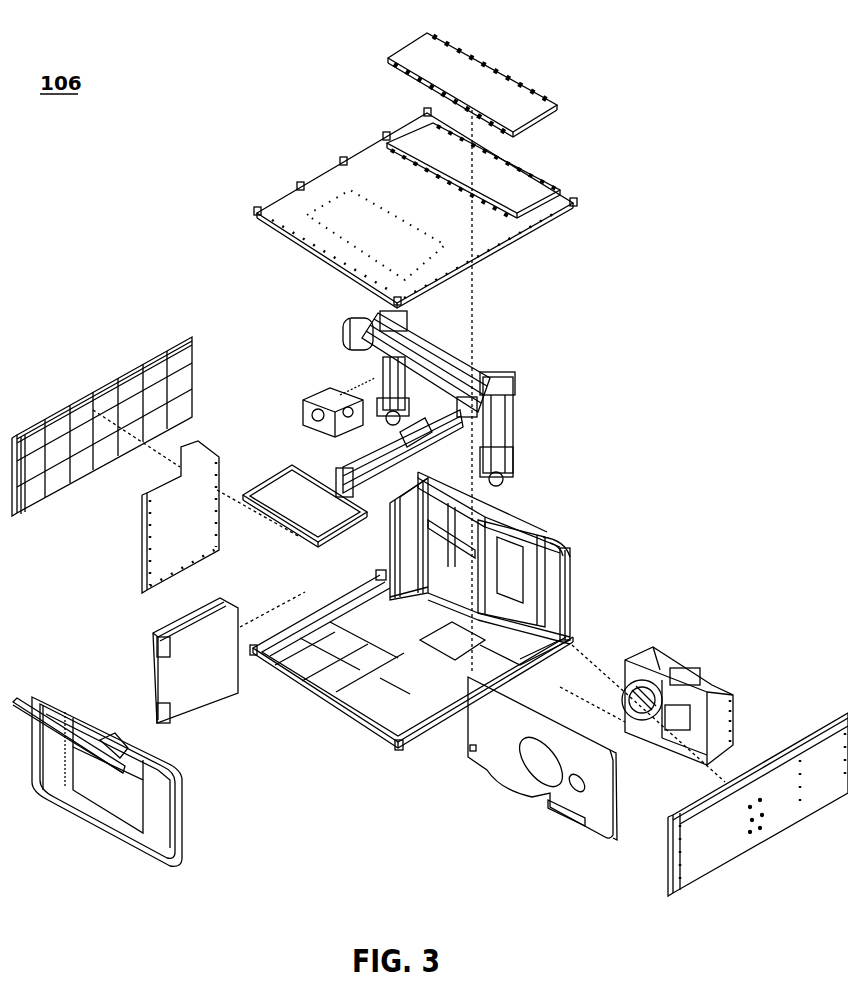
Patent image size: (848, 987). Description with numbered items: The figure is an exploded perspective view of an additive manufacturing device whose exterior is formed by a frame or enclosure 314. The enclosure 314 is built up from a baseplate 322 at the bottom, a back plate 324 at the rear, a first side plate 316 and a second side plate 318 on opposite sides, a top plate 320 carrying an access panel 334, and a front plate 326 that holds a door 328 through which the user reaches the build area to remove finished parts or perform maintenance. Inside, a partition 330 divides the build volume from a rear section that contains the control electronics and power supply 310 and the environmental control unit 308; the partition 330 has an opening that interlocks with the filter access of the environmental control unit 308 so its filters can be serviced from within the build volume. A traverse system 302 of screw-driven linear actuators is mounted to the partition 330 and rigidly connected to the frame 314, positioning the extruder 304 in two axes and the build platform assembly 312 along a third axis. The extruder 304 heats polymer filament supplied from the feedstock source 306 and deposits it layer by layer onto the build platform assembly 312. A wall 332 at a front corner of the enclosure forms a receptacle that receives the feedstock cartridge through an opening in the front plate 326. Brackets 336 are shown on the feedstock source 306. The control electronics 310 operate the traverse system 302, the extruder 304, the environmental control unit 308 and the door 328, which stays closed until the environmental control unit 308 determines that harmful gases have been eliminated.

The traverse system 302 is at (496, 372).
The extruder 304 is at (315, 395).
The feedstock source 306 is at (173, 685).
The environmental control unit 308 is at (720, 682).
The control electronics and power supply 310 is at (507, 517).
The build platform assembly 312 is at (285, 475).
The frame 314 is at (102, 415).
The first side plate 316 is at (110, 382).
The second side plate 318 is at (698, 867).
The top plate 320 is at (565, 200).
The baseplate 322 is at (340, 703).
The back plate 324 is at (567, 552).
The front plate 326 is at (140, 838).
The door 328 is at (18, 700).
The partition 330 is at (507, 780).
The wall 332 is at (147, 540).
The access panel 334 is at (405, 57).
The bracket 336 is at (163, 727).